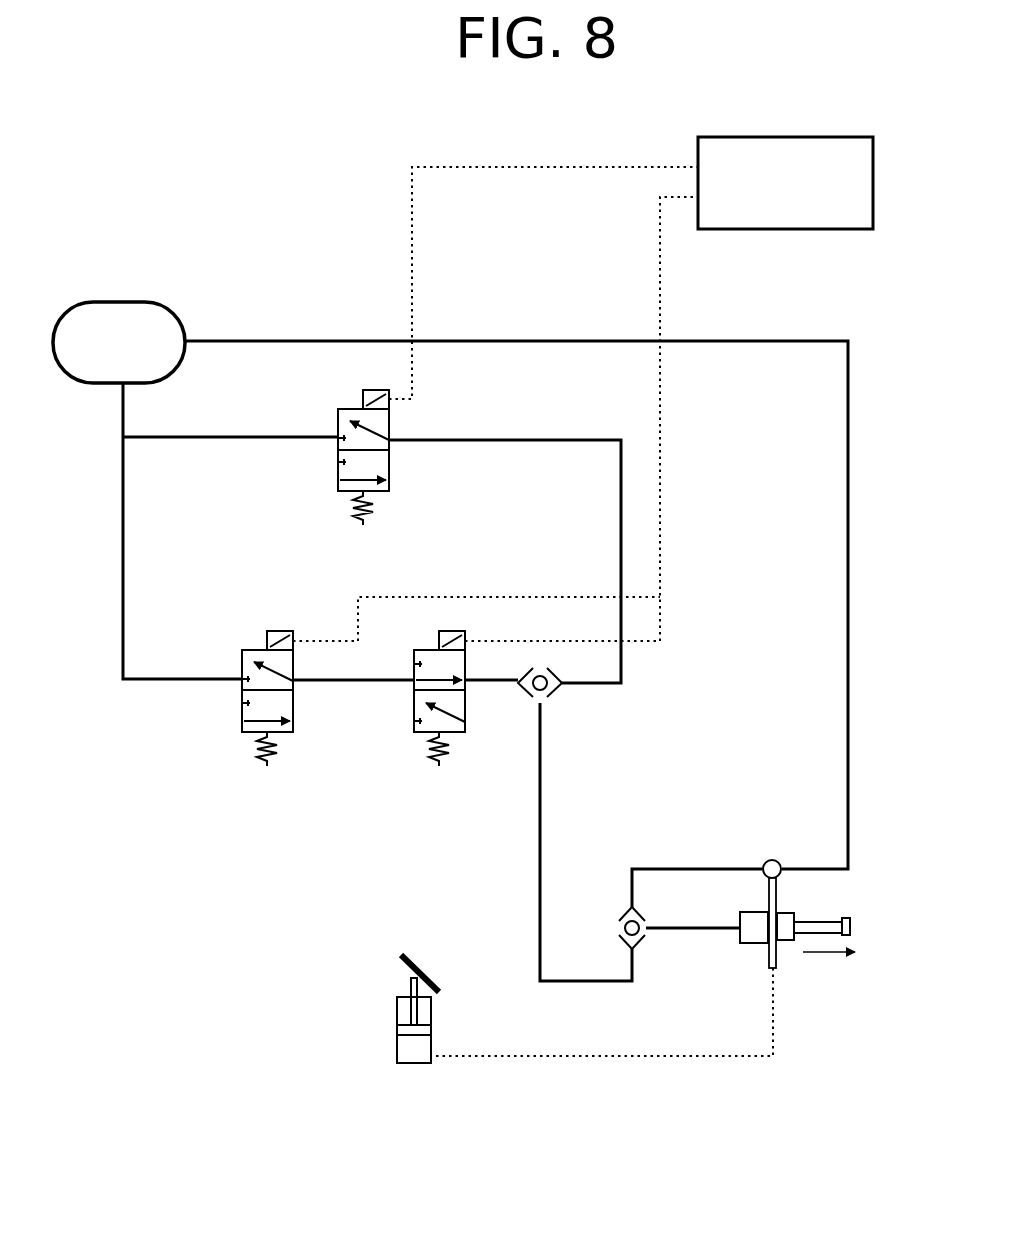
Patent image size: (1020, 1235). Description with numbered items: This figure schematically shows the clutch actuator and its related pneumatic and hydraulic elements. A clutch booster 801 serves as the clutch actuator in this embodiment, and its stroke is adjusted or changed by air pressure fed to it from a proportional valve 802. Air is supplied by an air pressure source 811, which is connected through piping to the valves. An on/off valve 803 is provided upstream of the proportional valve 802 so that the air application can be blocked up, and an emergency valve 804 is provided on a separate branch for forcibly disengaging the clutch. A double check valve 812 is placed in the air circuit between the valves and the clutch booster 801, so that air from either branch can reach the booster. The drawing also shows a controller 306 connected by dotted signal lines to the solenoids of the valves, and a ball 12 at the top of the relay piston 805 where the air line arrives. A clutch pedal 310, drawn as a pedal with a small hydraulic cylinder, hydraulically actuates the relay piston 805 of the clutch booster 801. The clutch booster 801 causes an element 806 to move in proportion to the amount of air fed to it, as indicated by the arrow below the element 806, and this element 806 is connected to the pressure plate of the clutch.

The air pressure source 811 is at (120, 302).
The controller 306 is at (773, 229).
The emergency valve 804 is at (389, 464).
The on/off valve 803 is at (242, 717).
The proportional valve 802 is at (414, 717).
The double check valve 812 is at (560, 690).
The ball 12 is at (770, 859).
The relay piston 805 is at (777, 893).
The element 806 is at (851, 930).
The clutch pedal 310 is at (416, 962).
The clutch booster 801 is at (811, 1010).